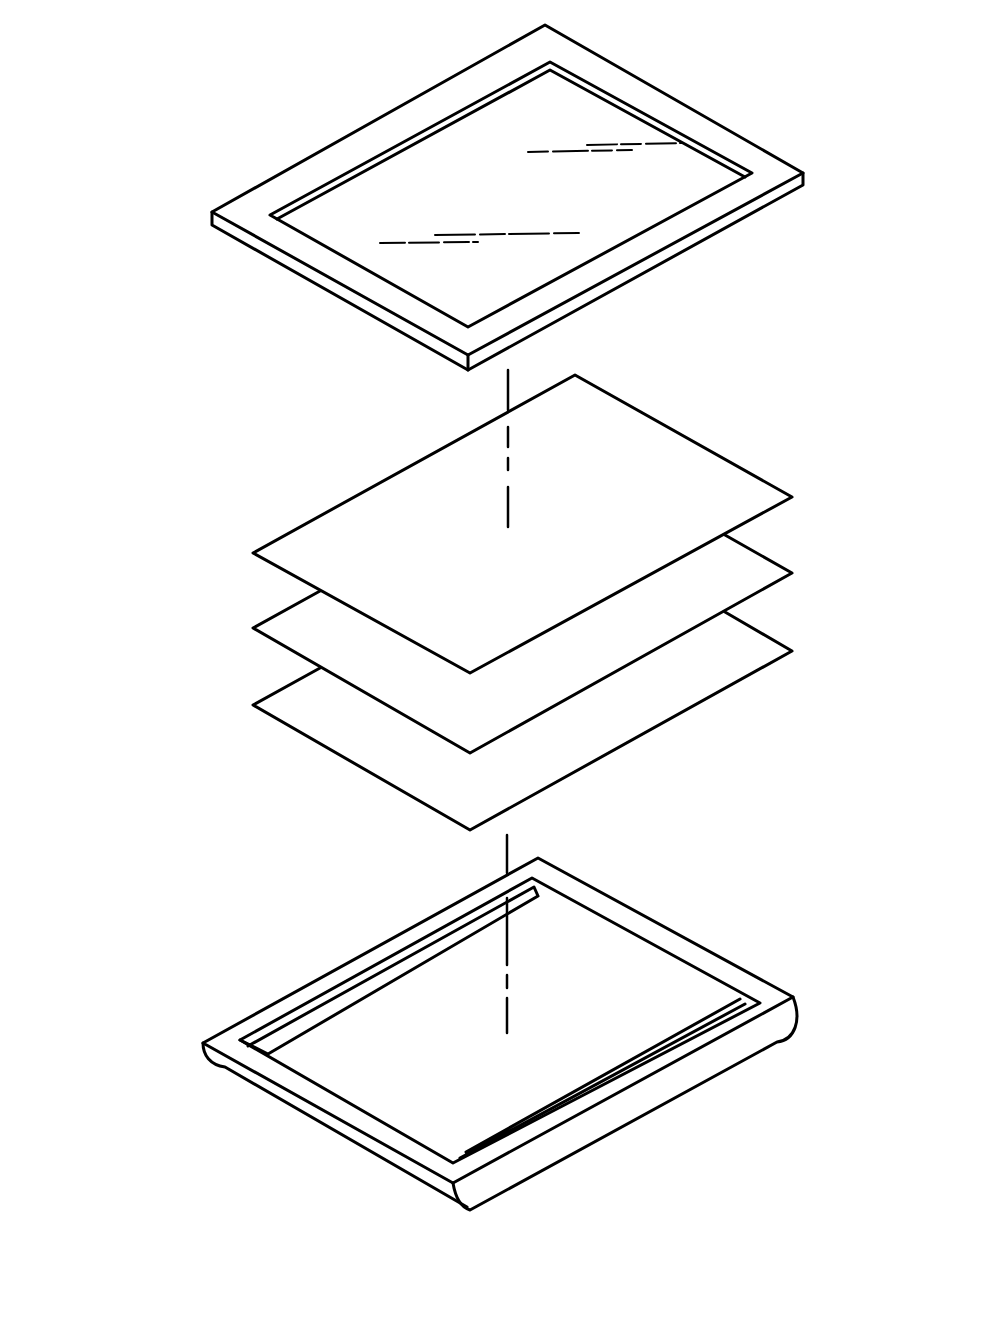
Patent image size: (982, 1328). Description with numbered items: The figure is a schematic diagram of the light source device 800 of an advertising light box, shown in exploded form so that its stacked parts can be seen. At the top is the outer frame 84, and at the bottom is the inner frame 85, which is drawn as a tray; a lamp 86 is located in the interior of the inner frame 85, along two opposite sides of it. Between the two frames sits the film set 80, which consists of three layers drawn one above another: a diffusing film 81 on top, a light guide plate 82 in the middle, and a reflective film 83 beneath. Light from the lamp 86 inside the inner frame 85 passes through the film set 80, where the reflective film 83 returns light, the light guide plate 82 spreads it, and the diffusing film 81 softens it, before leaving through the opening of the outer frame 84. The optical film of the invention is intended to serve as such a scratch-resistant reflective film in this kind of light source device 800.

The light source device 800 is at (167, 150).
The outer frame 84 is at (332, 155).
The film set 80 is at (155, 543).
The diffusing film 81 is at (298, 542).
The light guide plate 82 is at (298, 625).
The reflective film 83 is at (296, 700).
The inner frame 85 is at (258, 1021).
The lamp 86 is at (352, 997).